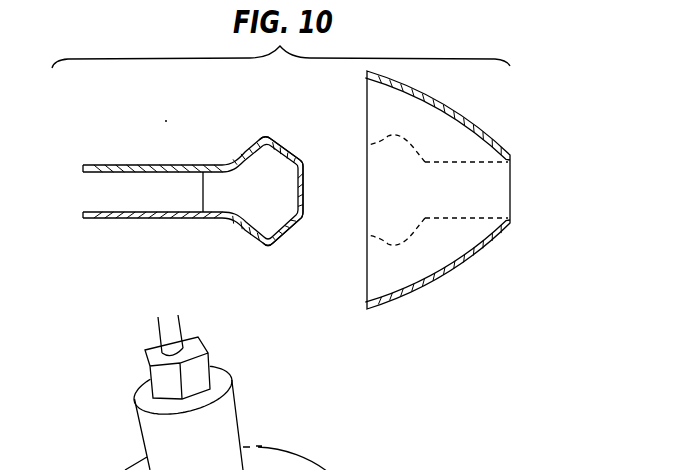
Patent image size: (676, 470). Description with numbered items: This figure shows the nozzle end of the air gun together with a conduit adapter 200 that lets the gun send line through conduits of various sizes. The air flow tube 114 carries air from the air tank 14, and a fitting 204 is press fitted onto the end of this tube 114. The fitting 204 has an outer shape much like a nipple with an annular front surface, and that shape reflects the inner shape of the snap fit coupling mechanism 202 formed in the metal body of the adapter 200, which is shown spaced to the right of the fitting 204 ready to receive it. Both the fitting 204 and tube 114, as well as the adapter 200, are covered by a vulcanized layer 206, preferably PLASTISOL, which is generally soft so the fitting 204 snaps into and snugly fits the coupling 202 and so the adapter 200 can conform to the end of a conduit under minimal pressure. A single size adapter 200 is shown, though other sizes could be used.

The air tank 14 is at (281, 448).
The air flow tube 114 is at (97, 211).
The adapter 200 is at (366, 265).
The snap fit coupling mechanism 202 is at (410, 238).
The fitting 204 is at (257, 160).
The vulcanized layer 206 is at (123, 217).